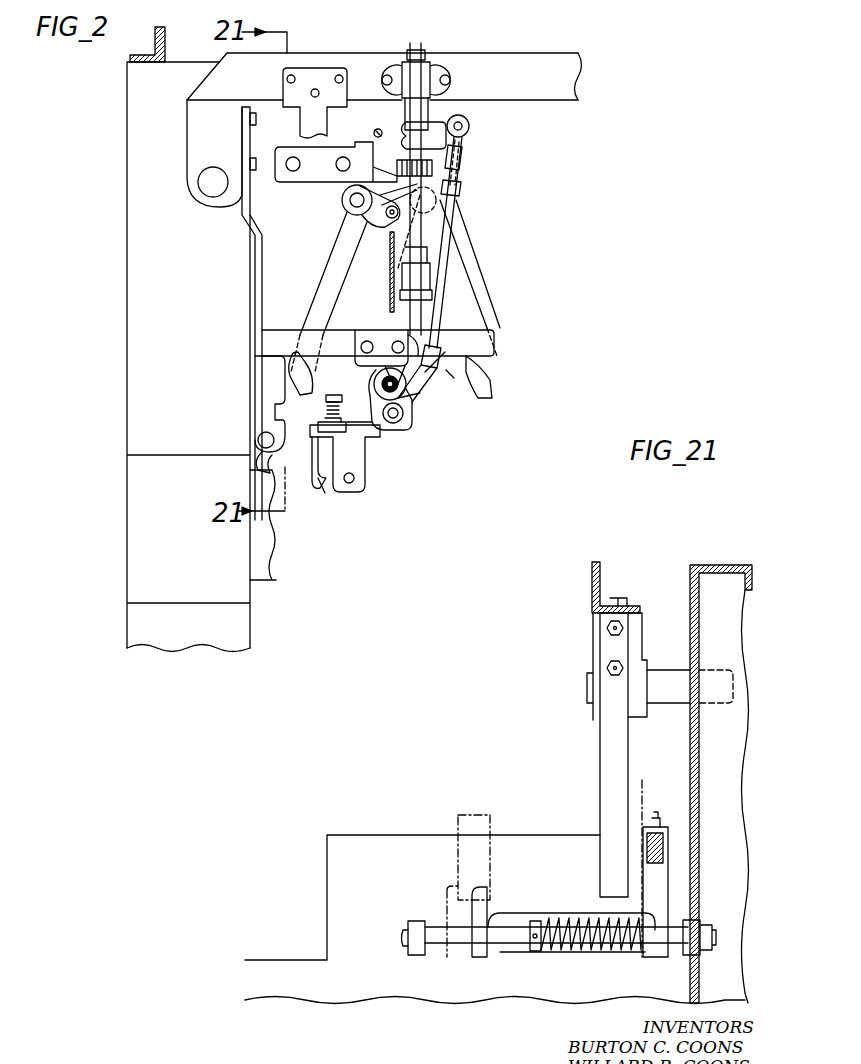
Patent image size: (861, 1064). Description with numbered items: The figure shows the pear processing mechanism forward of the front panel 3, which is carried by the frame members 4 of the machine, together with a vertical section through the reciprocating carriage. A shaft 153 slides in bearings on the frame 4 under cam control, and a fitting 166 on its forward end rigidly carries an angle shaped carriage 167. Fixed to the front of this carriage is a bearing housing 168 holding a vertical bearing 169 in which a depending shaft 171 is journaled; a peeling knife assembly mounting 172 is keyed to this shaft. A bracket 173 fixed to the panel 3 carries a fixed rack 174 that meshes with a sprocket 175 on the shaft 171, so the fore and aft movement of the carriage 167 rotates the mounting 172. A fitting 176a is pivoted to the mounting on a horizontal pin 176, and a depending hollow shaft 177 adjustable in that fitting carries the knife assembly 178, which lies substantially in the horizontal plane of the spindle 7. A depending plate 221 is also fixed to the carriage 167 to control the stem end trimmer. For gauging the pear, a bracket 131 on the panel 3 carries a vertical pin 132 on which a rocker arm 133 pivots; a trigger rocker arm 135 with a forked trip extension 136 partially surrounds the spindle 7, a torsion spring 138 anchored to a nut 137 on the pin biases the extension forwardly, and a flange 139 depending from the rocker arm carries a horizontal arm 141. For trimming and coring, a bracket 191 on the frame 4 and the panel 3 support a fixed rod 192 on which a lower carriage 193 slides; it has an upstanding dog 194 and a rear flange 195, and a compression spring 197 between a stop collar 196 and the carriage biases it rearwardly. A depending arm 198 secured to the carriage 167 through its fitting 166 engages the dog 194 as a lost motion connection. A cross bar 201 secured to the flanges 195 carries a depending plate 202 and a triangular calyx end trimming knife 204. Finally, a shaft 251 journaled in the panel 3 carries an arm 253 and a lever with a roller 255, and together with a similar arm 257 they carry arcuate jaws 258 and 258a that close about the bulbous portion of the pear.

In FIG. 21, the front panel 3 is at (700, 657).
In FIG. 2, the frame member 4 is at (127, 437).
In FIG. 21, the frame member 4 is at (378, 872).
In FIG. 2, the spindle 7 is at (380, 382).
In FIG. 2, the bracket 131 is at (356, 453).
In FIG. 2, the vertical pin 132 is at (324, 406).
In FIG. 2, the rocker arm 133 is at (318, 427).
In FIG. 2, the trigger rocker arm 135 is at (375, 426).
In FIG. 2, the trip extension 136 is at (416, 400).
In FIG. 2, the nut 137 is at (376, 400).
In FIG. 2, the torsion spring 138 is at (325, 410).
In FIG. 2, the flange 139 is at (318, 448).
In FIG. 2, the horizontal arm 141 is at (320, 486).
In FIG. 2, the reciprocating rod 153 is at (200, 187).
In FIG. 21, the reciprocating rod 153 is at (687, 700).
In FIG. 2, the fitting 166 is at (190, 128).
In FIG. 21, the fitting 166 is at (637, 633).
In FIG. 2, the angle shaped carriage 167 is at (250, 90).
In FIG. 21, the angle shaped carriage 167 is at (592, 583).
In FIG. 2, the bearing housing 168 is at (430, 78).
In FIG. 2, the vertical bearing 169 is at (405, 108).
In FIG. 2, the depending shaft 171 is at (419, 50).
In FIG. 2, the peeling knife assembly mounting 172 is at (433, 145).
In FIG. 2, the bracket 173 is at (370, 146).
In FIG. 2, the fixed rack 174 is at (397, 170).
In FIG. 2, the sprocket 175 is at (456, 188).
In FIG. 2, the horizontal pin 176 is at (469, 126).
In FIG. 2, the fitting 176a is at (458, 164).
In FIG. 2, the hollow shaft 177 is at (446, 222).
In FIG. 2, the knife assembly 178 is at (449, 380).
In FIG. 2, the bracket 191 is at (258, 467).
In FIG. 21, the bracket 191 is at (410, 952).
In FIG. 2, the fixed rod 192 is at (258, 440).
In FIG. 21, the fixed rod 192 is at (513, 945).
In FIG. 21, the carriage 193 is at (538, 910).
In FIG. 2, the dog 194 is at (262, 409).
In FIG. 21, the dog 194 is at (478, 890).
In FIG. 21, the flange 195 is at (667, 892).
In FIG. 21, the stop collar 196 is at (536, 953).
In FIG. 21, the compression spring 197 is at (591, 952).
In FIG. 2, the depending arm 198 is at (260, 272).
In FIG. 21, the depending arm 198 is at (604, 768).
In FIG. 2, the cross bar 201 is at (488, 332).
In FIG. 21, the cross bar 201 is at (666, 838).
In FIG. 2, the depending plate 202 is at (379, 332).
In FIG. 2, the calyx end trimming knife 204 is at (392, 340).
In FIG. 2, the depending plate 221 is at (300, 122).
In FIG. 2, the shaft 251 is at (342, 200).
In FIG. 2, the arm 253 is at (344, 236).
In FIG. 2, the roller 255 is at (386, 213).
In FIG. 2, the arm 257 is at (465, 275).
In FIG. 2, the arcuate jaw 258 is at (290, 383).
In FIG. 2, the arcuate jaw 258a is at (490, 390).